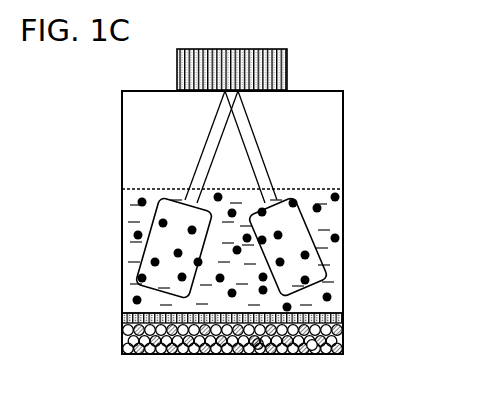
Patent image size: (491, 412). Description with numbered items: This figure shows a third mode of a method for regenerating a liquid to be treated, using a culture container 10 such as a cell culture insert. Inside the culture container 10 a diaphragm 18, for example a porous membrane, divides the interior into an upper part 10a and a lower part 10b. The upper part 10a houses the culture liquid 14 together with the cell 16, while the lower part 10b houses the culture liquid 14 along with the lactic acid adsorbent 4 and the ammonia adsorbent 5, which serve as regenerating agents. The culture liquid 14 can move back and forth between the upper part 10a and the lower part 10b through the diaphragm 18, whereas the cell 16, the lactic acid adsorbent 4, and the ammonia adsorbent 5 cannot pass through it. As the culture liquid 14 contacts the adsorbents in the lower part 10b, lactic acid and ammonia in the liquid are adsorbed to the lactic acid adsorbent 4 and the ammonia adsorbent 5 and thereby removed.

The culture liquid 14 is at (308, 188).
The cell 16 is at (336, 238).
The diaphragm 18 is at (122, 320).
The culture container 10 is at (418, 265).
The upper part 10a is at (341, 271).
The lower part 10b is at (342, 334).
The ammonia adsorbent 5 is at (258, 345).
The lactic acid adsorbent 4 is at (312, 346).